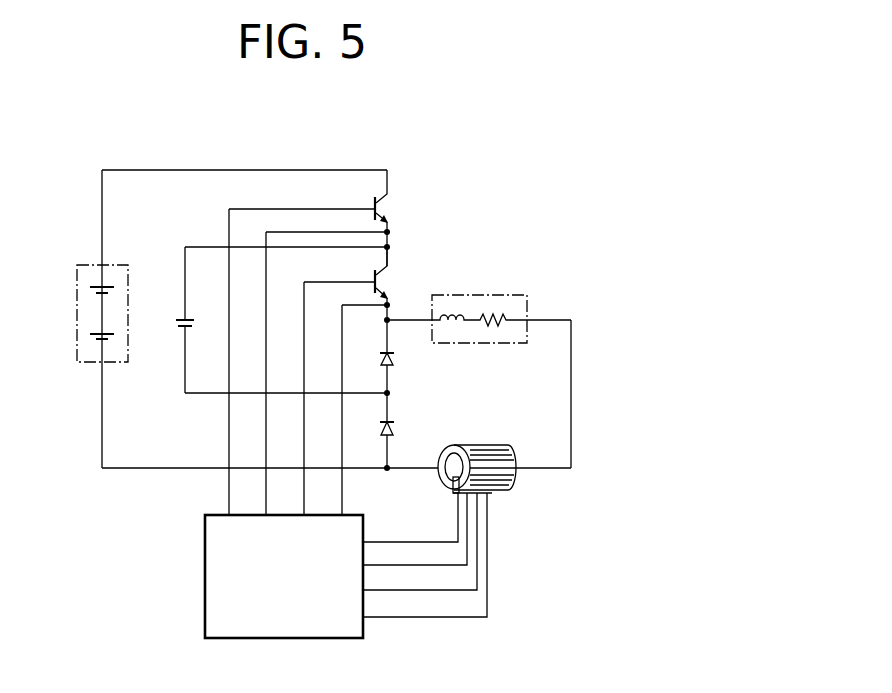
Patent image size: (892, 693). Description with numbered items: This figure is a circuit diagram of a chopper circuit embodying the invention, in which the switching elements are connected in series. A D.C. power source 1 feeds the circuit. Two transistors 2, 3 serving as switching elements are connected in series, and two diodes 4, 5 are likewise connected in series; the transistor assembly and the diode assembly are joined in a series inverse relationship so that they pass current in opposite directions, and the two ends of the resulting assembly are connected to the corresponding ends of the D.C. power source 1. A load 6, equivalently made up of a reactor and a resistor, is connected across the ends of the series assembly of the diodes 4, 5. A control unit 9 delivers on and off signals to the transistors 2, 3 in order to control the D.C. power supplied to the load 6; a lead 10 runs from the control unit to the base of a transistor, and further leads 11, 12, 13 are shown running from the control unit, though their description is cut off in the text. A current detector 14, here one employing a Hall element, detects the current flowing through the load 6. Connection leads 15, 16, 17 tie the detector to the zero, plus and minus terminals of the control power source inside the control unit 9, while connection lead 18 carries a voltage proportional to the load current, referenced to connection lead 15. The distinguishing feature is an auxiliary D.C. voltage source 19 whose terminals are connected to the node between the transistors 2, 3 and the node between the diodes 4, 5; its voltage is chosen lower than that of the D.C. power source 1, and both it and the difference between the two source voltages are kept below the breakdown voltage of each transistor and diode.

The D.C. power source 1 is at (78, 295).
The transistor 2 is at (389, 208).
The transistor 3 is at (389, 281).
The diode 4 is at (393, 359).
The diode 5 is at (393, 427).
The load 6 is at (494, 293).
The control unit 9 is at (205, 588).
The lead 10 is at (228, 443).
The signal line 11 is at (266, 442).
The control signal line 12 is at (304, 445).
The signal line 13 is at (342, 445).
The current detector 14 is at (510, 487).
The connection lead 15 is at (393, 540).
The connection lead 16 is at (422, 563).
The connection lead 17 is at (441, 591).
The connection lead 18 is at (405, 618).
The auxiliary D.C. voltage source 19 is at (176, 322).